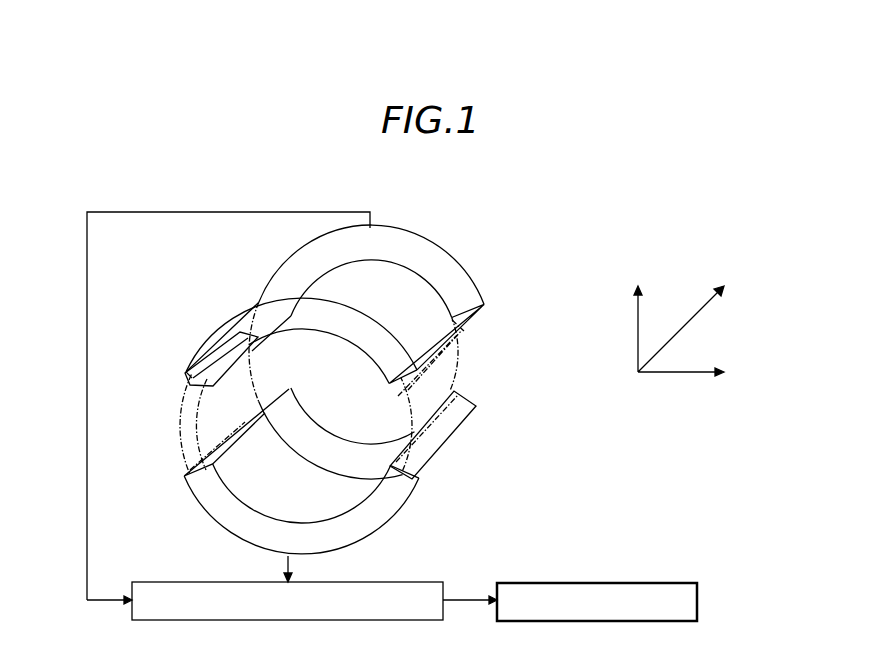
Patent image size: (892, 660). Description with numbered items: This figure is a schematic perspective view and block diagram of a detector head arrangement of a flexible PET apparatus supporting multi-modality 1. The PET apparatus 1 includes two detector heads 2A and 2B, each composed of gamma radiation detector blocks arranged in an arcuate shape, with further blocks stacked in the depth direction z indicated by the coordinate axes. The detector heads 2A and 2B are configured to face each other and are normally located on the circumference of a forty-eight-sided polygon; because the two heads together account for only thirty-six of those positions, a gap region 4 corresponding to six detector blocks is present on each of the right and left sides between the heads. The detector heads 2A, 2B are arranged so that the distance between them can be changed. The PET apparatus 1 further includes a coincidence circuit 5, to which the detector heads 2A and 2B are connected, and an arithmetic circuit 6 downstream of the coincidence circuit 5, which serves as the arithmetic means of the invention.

The flexible PET apparatus supporting multi-modality 1 is at (612, 254).
The detector head 2A is at (473, 272).
The detector head 2B is at (237, 543).
The gap region 4 is at (178, 427).
The coincidence circuit 5 is at (143, 582).
The arithmetic circuit 6 is at (510, 583).